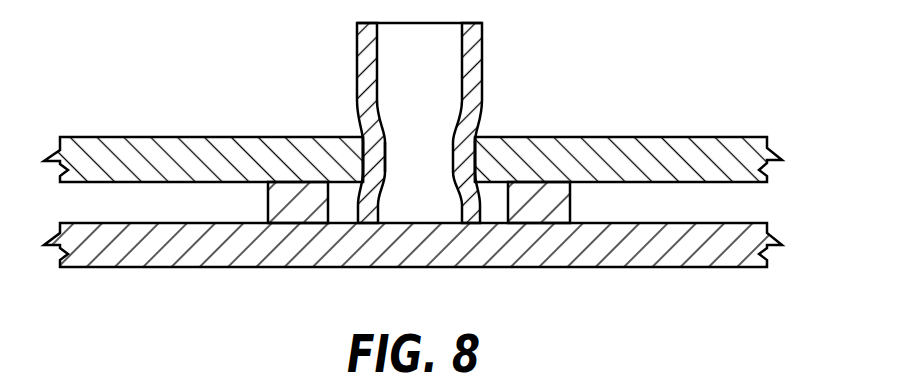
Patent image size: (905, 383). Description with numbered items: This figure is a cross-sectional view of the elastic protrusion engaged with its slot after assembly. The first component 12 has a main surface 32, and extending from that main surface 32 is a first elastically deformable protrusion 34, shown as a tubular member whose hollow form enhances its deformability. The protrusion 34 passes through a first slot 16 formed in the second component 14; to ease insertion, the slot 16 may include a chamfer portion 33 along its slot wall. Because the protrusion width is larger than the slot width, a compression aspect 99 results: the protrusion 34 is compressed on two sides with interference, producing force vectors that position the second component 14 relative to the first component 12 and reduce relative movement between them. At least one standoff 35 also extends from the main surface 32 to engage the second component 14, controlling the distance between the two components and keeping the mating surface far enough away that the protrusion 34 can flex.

The second component 14 is at (627, 137).
The first component 12 is at (217, 268).
The first elastically deformable protrusion 34 is at (484, 65).
The first slot 16 is at (480, 133).
The compression aspect 99 is at (357, 133).
The chamfer portion 33 is at (381, 174).
The standoff 35 is at (297, 205).
The main surface 32 is at (142, 222).